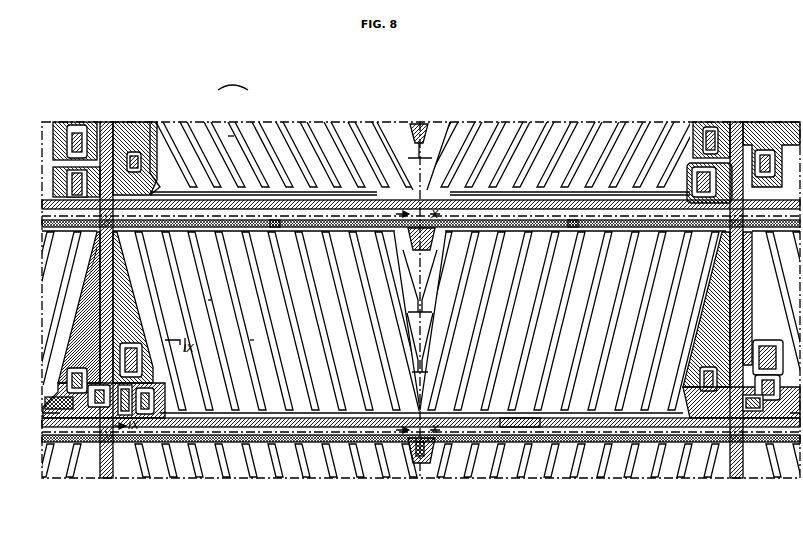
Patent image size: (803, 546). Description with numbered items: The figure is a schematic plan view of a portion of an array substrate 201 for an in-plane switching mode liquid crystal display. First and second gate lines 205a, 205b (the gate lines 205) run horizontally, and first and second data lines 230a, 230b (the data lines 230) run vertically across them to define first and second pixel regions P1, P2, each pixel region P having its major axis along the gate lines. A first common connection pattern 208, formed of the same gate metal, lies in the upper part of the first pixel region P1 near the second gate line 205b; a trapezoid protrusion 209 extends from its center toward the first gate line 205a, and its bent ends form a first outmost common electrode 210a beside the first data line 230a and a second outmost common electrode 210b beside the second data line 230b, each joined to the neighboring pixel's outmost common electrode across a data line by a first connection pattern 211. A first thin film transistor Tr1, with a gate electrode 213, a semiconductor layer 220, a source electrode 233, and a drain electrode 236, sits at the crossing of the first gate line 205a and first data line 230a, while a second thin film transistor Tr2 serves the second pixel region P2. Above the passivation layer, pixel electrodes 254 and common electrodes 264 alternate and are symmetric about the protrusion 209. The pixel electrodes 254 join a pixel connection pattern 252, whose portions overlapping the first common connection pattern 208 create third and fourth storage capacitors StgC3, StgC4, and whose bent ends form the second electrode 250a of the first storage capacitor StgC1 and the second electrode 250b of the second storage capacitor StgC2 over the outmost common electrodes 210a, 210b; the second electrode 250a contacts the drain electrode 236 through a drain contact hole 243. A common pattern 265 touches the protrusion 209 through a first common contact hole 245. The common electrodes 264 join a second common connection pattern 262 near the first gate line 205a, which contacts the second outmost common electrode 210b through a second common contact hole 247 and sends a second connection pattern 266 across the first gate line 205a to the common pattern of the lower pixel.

The array substrate 201 is at (712, 68).
The data line 230 is at (431, 296).
The first data line 230a is at (106, 122).
The second data line 230b is at (736, 478).
The gate line 205 is at (421, 303).
The first gate line 205a is at (305, 420).
The second gate line 205b is at (477, 207).
The first storage capacitor StgC1 is at (135, 160).
The second storage capacitor StgC2 is at (745, 176).
The third storage capacitor StgC3 is at (275, 222).
The fourth storage capacitor StgC4 is at (573, 222).
The first thin film transistor Tr1 is at (90, 423).
The second thin film transistor Tr2 is at (686, 165).
The pixel region P is at (233, 79).
The first pixel region P1 is at (213, 298).
The second pixel region P2 is at (235, 132).
The pixel connection pattern 252 is at (248, 222).
The first common contact hole 245 is at (412, 230).
The first common connection pattern 208 is at (417, 143).
The protrusion 209 is at (436, 175).
The first connection pattern 211 is at (95, 311).
The drain contact hole 243 is at (108, 351).
The gate electrode 213 is at (93, 381).
The drain electrode 236 is at (67, 406).
The second electrode of the first storage capacitor 250a is at (139, 323).
The first outmost common electrode 210a is at (147, 340).
The pixel electrode 254 is at (258, 308).
The common electrode 264 is at (251, 342).
The common pattern 265 is at (413, 267).
The second electrode of the second storage capacitor 250b is at (705, 297).
The second outmost common electrode 210b is at (702, 310).
The semiconductor layer 220 is at (124, 427).
The source electrode 233 is at (142, 420).
The second connection pattern 266 is at (410, 462).
The second common connection pattern 262 is at (522, 428).
The second common contact hole 247 is at (712, 412).